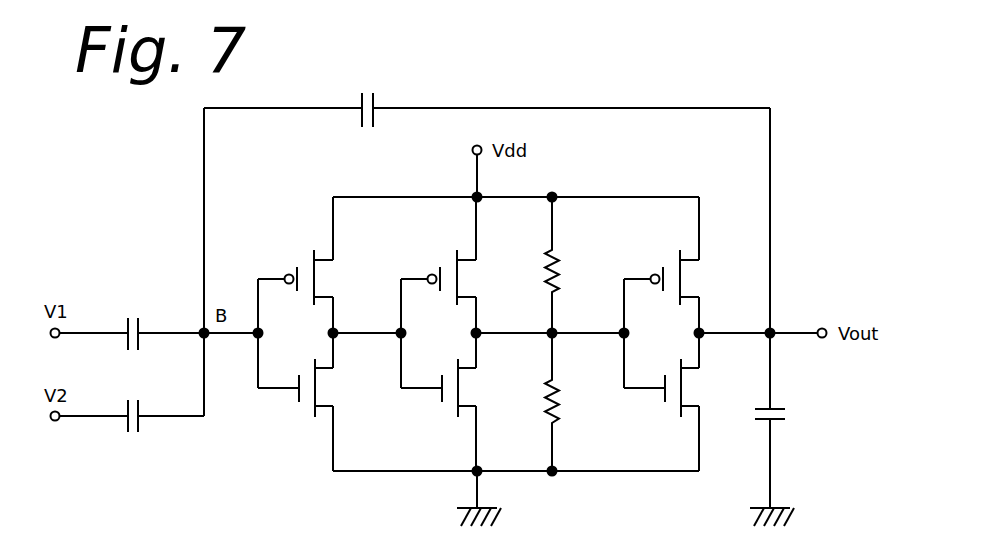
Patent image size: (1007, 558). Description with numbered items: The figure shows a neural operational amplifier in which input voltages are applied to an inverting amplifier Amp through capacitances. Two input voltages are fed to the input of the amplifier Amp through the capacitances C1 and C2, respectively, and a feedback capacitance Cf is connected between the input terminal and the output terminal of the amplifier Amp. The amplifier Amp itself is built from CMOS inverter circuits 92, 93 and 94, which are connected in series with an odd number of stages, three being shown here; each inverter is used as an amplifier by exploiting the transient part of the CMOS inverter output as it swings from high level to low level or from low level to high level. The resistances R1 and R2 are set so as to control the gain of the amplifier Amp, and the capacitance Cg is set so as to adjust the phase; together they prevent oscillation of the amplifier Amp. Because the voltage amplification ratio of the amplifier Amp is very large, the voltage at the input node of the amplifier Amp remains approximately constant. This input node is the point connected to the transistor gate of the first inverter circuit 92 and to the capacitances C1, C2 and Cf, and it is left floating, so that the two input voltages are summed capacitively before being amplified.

The CMOS inverter circuit 92 is at (311, 343).
The CMOS inverter circuit 93 is at (454, 343).
The CMOS inverter circuit 94 is at (675, 343).
The feedback capacitance Cf is at (487, 99).
The capacitance C1 is at (130, 322).
The capacitance C2 is at (130, 405).
The capacitance Cg is at (787, 402).
The resistance R1 is at (532, 265).
The resistance R2 is at (533, 402).
The inverting amplifier Amp is at (718, 149).